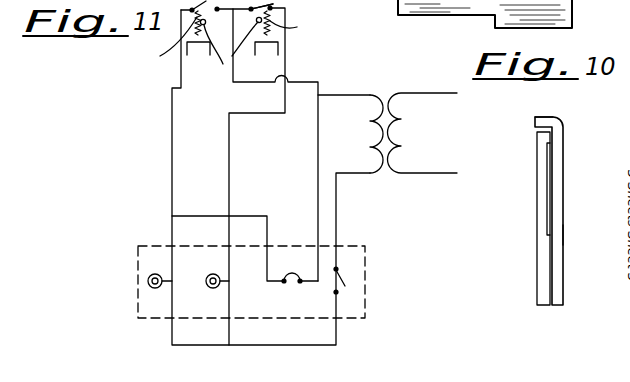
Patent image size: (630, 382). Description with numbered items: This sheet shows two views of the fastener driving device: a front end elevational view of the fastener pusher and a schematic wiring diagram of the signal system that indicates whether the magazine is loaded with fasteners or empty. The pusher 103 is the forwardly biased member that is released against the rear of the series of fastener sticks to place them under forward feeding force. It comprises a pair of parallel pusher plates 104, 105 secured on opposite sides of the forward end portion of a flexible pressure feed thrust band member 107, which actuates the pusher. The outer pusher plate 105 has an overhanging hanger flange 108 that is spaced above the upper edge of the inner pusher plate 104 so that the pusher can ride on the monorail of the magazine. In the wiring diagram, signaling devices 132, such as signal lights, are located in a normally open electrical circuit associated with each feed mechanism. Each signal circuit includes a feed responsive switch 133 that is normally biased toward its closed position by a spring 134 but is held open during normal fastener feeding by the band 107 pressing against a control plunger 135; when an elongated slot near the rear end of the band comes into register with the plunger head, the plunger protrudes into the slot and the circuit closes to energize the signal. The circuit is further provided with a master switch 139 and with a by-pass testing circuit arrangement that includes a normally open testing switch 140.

In FIG. 11, the feed responsive switch 133 is at (277, 4).
In FIG. 11, the spring 134 is at (231, 42).
In FIG. 11, the control plunger 135 is at (229, 53).
In FIG. 11, the signaling devices 132 is at (209, 275).
In FIG. 11, the testing switch 140 is at (295, 268).
In FIG. 11, the master switch 139 is at (344, 286).
In FIG. 10, the pusher plate 104 is at (478, 10).
In FIG. 10, the pusher 103 is at (575, 179).
In FIG. 10, the flexible pressure feed thrust band member 107 is at (550, 177).
In FIG. 10, the hanger flange 108 is at (550, 115).
In FIG. 10, the pusher plate 105 is at (563, 233).